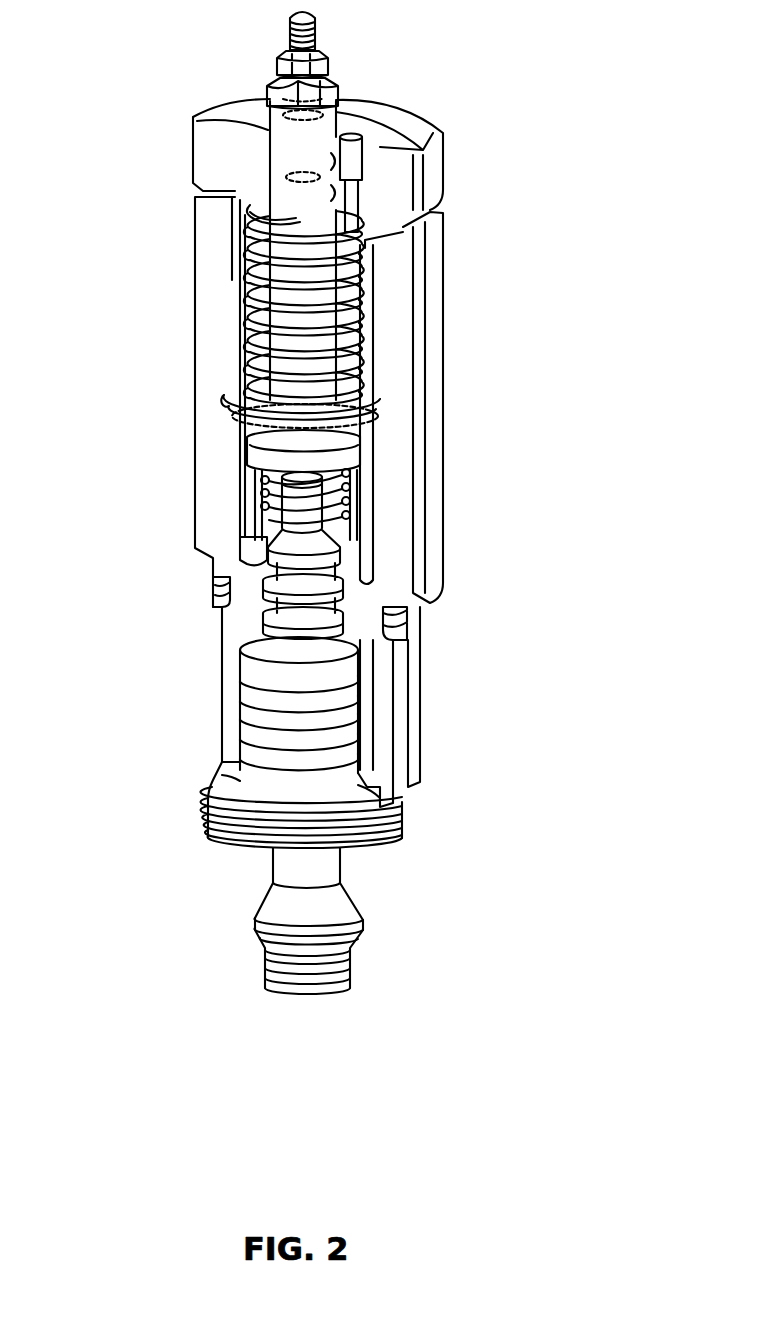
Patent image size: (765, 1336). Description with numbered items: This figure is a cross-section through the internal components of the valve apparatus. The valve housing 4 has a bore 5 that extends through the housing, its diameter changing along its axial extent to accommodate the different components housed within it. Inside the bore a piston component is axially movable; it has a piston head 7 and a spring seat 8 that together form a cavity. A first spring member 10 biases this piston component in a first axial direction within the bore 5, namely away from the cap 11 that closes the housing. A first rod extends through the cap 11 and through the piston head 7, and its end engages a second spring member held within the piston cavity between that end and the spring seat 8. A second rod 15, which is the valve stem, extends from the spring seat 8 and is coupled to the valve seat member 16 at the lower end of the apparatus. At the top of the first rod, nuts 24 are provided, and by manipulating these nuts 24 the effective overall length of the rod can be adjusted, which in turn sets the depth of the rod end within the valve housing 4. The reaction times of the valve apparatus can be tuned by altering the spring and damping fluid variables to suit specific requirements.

The valve housing 4 is at (398, 283).
The bore 5 is at (368, 326).
The piston head 7 is at (240, 370).
The spring seat 8 is at (250, 497).
The first spring member 10 is at (280, 228).
The cap 11 is at (230, 172).
The second rod 15 is at (300, 548).
The valve seat member 16 is at (298, 908).
The nuts 24 is at (322, 92).